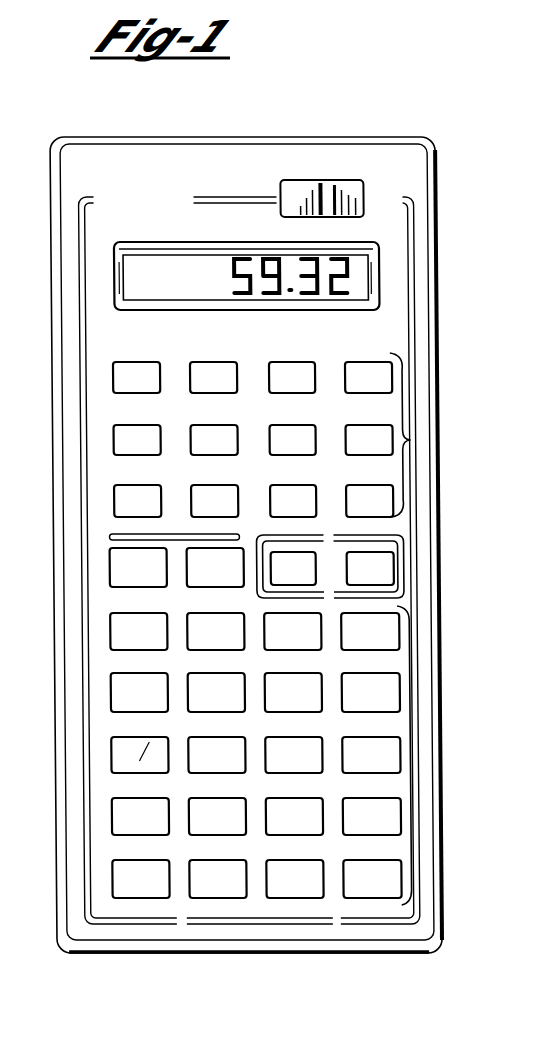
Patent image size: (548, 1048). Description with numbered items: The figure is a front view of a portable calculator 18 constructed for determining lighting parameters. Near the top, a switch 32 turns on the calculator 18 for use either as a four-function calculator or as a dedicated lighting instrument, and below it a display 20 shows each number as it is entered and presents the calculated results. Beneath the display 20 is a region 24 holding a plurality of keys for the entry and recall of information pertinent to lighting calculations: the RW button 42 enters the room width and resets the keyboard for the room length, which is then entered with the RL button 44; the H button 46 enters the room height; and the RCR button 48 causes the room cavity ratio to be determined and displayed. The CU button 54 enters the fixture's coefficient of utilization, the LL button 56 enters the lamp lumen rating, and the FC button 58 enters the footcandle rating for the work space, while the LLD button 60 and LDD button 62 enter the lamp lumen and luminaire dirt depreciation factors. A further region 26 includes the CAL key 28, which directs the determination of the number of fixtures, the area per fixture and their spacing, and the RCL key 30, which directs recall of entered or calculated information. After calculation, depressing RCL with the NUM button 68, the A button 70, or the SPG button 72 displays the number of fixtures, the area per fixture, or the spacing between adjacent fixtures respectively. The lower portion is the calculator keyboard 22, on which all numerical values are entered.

The calculator 18 is at (52, 193).
The display 20 is at (166, 245).
The calculator keyboard 22 is at (405, 725).
The region 24 is at (297, 420).
The region 26 is at (258, 537).
The calculate (CAL) key 28 is at (380, 553).
The key 30 is at (267, 568).
The switch 32 is at (345, 180).
The RW button 42 is at (136, 362).
The RL button 44 is at (214, 362).
The H button 46 is at (293, 362).
The RCR button 48 is at (369, 362).
The CU button 54 is at (136, 425).
The LL button 56 is at (214, 425).
The FC button 58 is at (293, 425).
The LLD button 60 is at (136, 485).
The LDD button 62 is at (214, 485).
The NUM button 68 is at (369, 425).
The A button 70 is at (293, 485).
The SPG button 72 is at (369, 485).